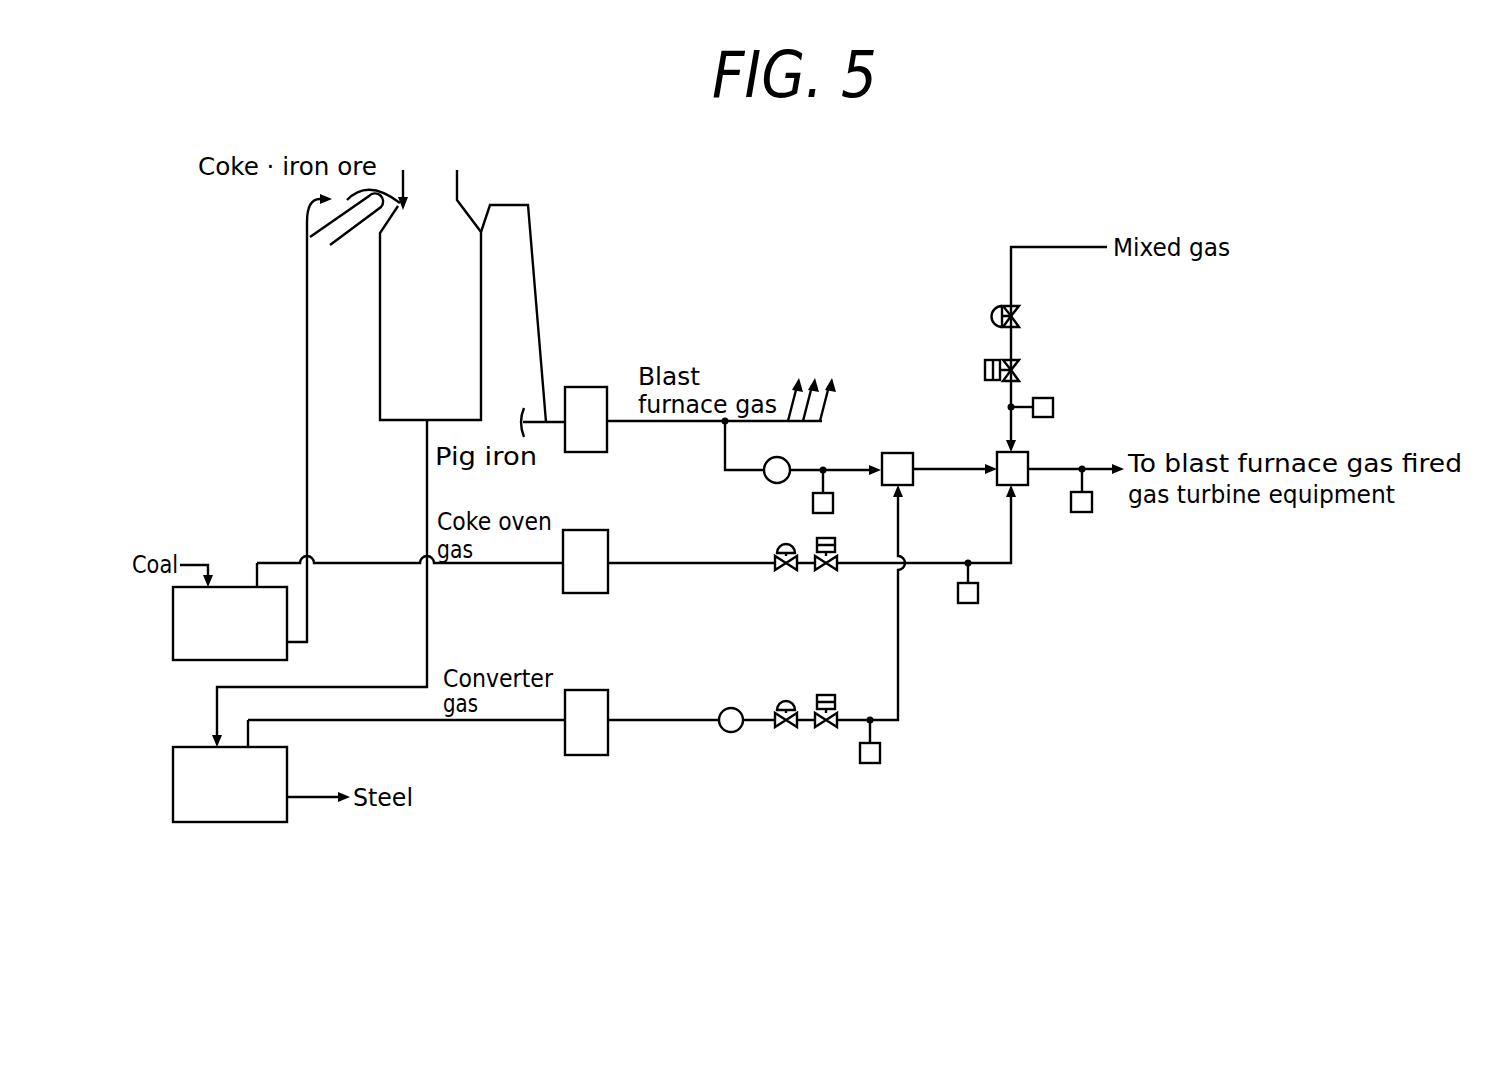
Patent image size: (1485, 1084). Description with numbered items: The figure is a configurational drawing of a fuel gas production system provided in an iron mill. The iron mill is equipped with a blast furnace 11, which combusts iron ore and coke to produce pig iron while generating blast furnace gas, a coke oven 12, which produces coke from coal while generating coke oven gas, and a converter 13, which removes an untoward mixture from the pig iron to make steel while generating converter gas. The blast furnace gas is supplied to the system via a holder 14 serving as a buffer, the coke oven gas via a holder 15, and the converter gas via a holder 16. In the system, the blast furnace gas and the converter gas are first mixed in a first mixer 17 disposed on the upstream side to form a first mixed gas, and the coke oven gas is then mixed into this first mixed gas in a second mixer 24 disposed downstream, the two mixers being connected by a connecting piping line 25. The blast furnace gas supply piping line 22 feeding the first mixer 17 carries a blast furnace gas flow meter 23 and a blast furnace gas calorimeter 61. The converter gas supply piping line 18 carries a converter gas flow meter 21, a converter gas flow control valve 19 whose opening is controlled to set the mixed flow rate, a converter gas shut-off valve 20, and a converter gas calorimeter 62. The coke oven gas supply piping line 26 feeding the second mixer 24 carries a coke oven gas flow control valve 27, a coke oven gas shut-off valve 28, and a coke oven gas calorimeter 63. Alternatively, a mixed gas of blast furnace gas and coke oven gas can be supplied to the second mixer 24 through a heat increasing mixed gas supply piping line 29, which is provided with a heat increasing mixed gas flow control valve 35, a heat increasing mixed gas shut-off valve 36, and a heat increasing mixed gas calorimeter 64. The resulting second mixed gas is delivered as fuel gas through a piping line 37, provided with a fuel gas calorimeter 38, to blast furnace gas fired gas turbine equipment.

The blast furnace 11 is at (380, 300).
The coke oven 12 is at (173, 617).
The converter 13 is at (173, 785).
The holder 14 is at (587, 387).
The holder 15 is at (587, 530).
The holder 16 is at (587, 690).
The first mixer 17 is at (897, 453).
The converter gas supply piping line 18 is at (898, 653).
The converter gas flow control valve 19 is at (786, 698).
The converter gas shut-off valve 20 is at (828, 695).
The converter gas flow meter 21 is at (731, 708).
The blast furnace gas supply piping line 22 is at (842, 468).
The blast furnace gas flow meter 23 is at (770, 461).
The second mixer 24 is at (1002, 452).
The connecting piping line 25 is at (946, 468).
The coke oven gas supply piping line 26 is at (934, 562).
The coke oven gas flow control valve 27 is at (777, 547).
The coke oven gas shut-off valve 28 is at (835, 539).
The heat increasing mixed gas supply piping line 29 is at (1013, 395).
The heat increasing mixed gas flow control valve 35 is at (987, 316).
The heat increasing mixed gas shut-off valve 36 is at (985, 370).
The piping line 37 is at (1060, 468).
The fuel gas calorimeter 38 is at (1082, 512).
The blast furnace gas calorimeter 61 is at (813, 503).
The converter gas calorimeter 62 is at (880, 753).
The coke oven gas calorimeter 63 is at (978, 593).
The heat increasing mixed gas calorimeter 64 is at (1053, 407).